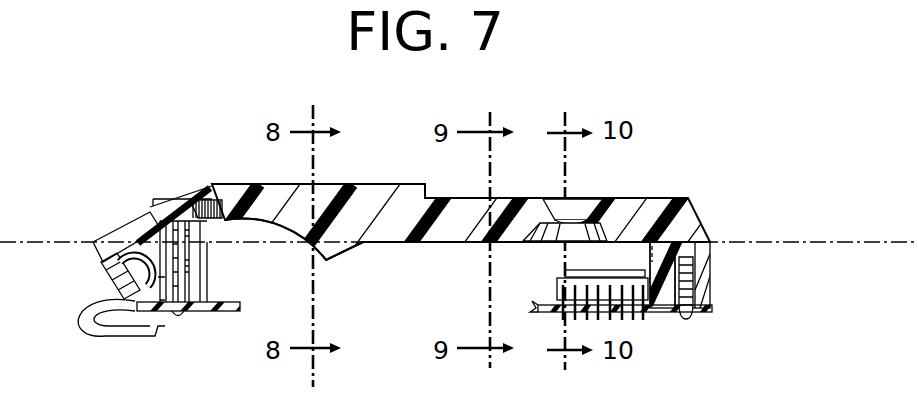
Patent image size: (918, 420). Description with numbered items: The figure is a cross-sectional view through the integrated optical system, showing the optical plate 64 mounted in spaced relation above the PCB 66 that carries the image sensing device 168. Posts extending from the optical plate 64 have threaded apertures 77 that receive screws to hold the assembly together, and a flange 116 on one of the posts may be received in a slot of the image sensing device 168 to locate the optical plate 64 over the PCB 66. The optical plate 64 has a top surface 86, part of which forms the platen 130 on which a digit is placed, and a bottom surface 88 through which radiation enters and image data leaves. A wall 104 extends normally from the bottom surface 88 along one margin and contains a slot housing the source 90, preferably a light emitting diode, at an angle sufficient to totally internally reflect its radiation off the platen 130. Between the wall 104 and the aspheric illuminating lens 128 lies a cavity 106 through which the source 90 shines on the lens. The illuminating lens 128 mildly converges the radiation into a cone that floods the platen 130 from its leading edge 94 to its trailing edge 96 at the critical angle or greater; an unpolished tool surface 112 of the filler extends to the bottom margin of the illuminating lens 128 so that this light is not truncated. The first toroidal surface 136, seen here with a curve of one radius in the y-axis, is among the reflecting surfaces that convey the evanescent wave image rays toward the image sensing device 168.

The optical plate 64 is at (683, 217).
The PCB 66 is at (240, 306).
The threaded apertures 77 is at (710, 297).
The top surface 86 is at (178, 198).
The bottom surface 88 is at (402, 247).
The source 90 is at (130, 227).
The leading edge 94 is at (204, 190).
The trailing edge 96 is at (425, 195).
The wall 104 is at (127, 323).
The cavity 106 is at (160, 253).
The unpolished tool surface 112 is at (353, 255).
The flange 116 is at (652, 248).
The illuminating lens 128 is at (368, 252).
The platen 130 is at (385, 190).
The first toroidal surface 136 is at (498, 195).
The image sensing device 168 is at (557, 283).